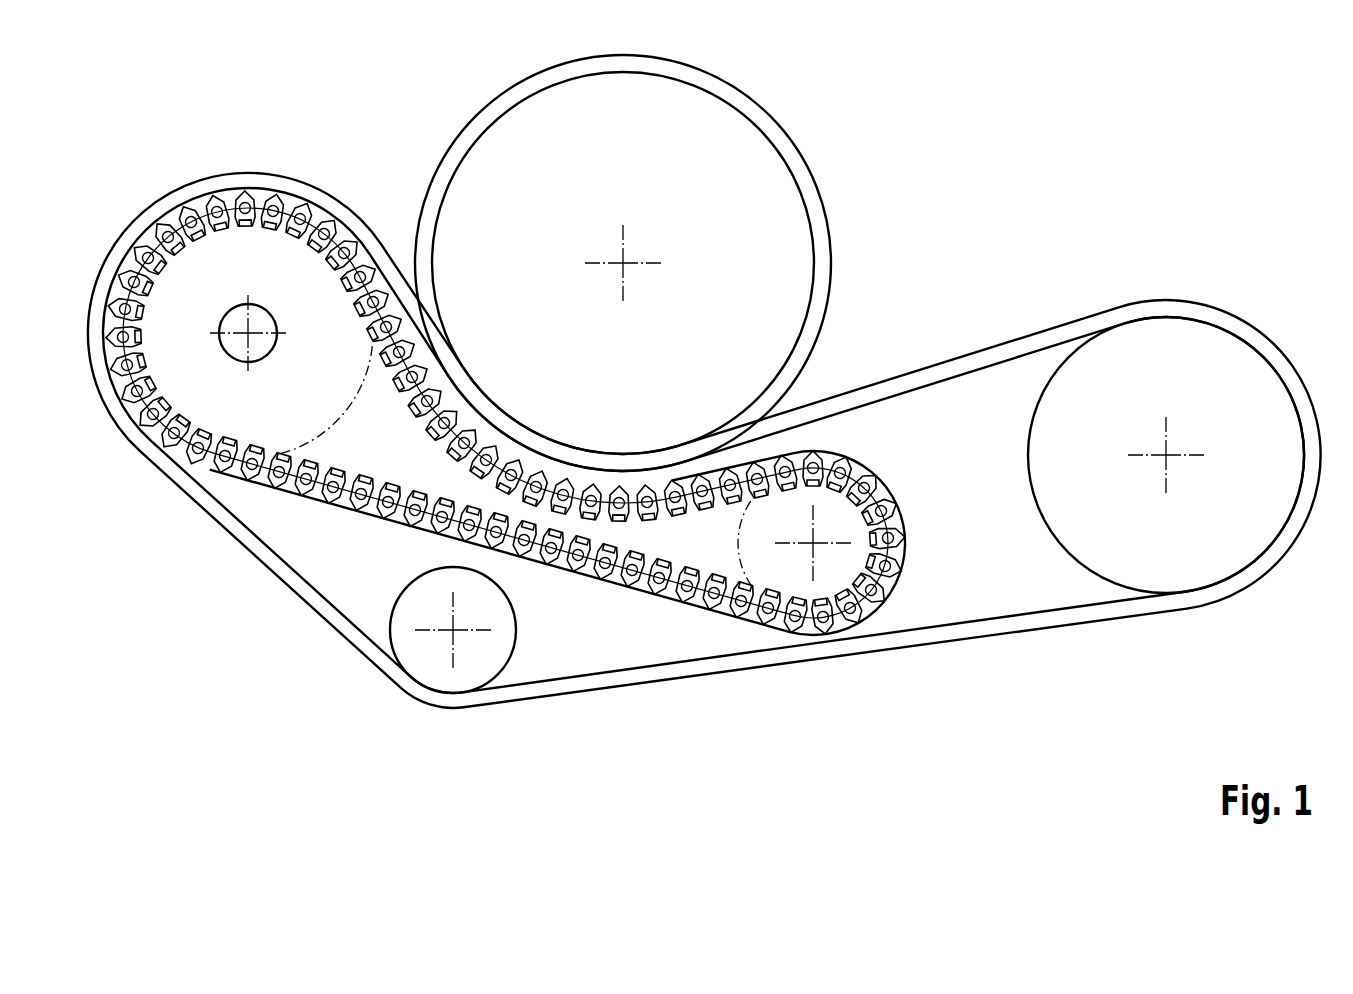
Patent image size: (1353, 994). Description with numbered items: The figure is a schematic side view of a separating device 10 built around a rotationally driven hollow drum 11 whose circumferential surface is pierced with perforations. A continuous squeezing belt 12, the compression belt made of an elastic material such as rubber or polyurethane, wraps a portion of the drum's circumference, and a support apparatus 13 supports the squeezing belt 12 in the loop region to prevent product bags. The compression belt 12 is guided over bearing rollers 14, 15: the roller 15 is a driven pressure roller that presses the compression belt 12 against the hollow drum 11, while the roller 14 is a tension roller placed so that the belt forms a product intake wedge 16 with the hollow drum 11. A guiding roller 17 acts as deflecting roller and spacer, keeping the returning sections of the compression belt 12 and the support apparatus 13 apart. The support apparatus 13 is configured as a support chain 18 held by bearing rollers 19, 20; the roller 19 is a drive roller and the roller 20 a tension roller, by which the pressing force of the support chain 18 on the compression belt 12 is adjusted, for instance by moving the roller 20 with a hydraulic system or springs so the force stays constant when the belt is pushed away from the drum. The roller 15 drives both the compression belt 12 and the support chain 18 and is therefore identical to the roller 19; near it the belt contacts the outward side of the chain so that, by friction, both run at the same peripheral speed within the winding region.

The separating device 10 is at (1110, 124).
The hollow drum 11 is at (825, 260).
The squeezing belt 12 is at (1043, 342).
The support apparatus 13 is at (625, 615).
The tension roller 14 is at (1190, 330).
The driven pressure roller 15 is at (253, 240).
The product intake wedge 16 is at (852, 367).
The guiding roller 17 is at (442, 677).
The support chain 18 is at (720, 603).
The drive roller 19 is at (314, 282).
The tension roller 20 is at (808, 592).